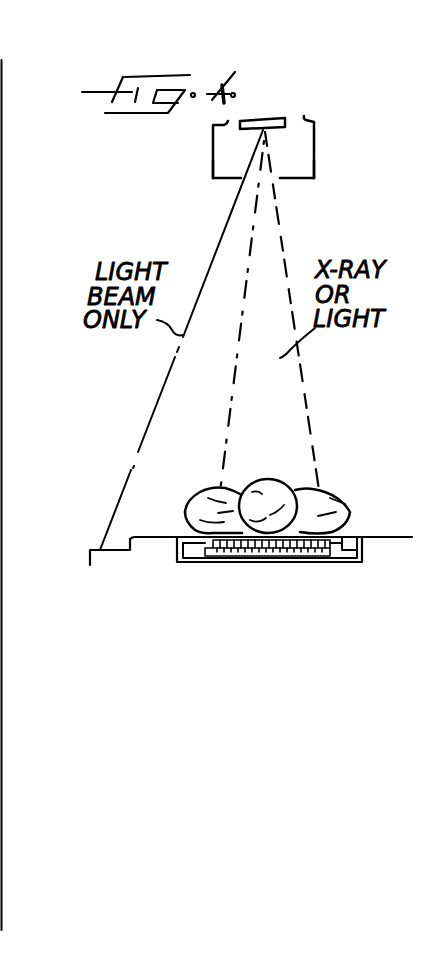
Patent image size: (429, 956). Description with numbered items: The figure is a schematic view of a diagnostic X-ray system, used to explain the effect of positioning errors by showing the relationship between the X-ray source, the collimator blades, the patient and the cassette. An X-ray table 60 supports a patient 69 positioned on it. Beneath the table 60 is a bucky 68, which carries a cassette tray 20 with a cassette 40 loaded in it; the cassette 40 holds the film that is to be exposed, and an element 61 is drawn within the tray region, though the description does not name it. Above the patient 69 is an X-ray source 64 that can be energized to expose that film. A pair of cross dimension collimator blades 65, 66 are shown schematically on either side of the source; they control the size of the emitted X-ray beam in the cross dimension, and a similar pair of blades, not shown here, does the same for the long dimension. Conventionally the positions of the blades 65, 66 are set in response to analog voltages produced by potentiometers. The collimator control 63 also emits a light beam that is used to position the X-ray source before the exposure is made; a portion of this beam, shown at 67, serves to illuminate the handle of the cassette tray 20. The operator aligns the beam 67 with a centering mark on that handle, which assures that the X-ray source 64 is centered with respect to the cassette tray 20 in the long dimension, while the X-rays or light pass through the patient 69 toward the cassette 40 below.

The cassette tray 20 is at (348, 550).
The cassette 40 is at (277, 556).
The X-ray table 60 is at (382, 535).
The cassette tray 61 is at (337, 557).
The collimator control 63 is at (306, 146).
The X-ray source 64 is at (255, 118).
The cross dimension collimator blade 65 is at (245, 187).
The cross dimension collimator blade 66 is at (282, 178).
The light beam portion 67 is at (135, 455).
The bucky 68 is at (362, 553).
The patient 69 is at (350, 509).